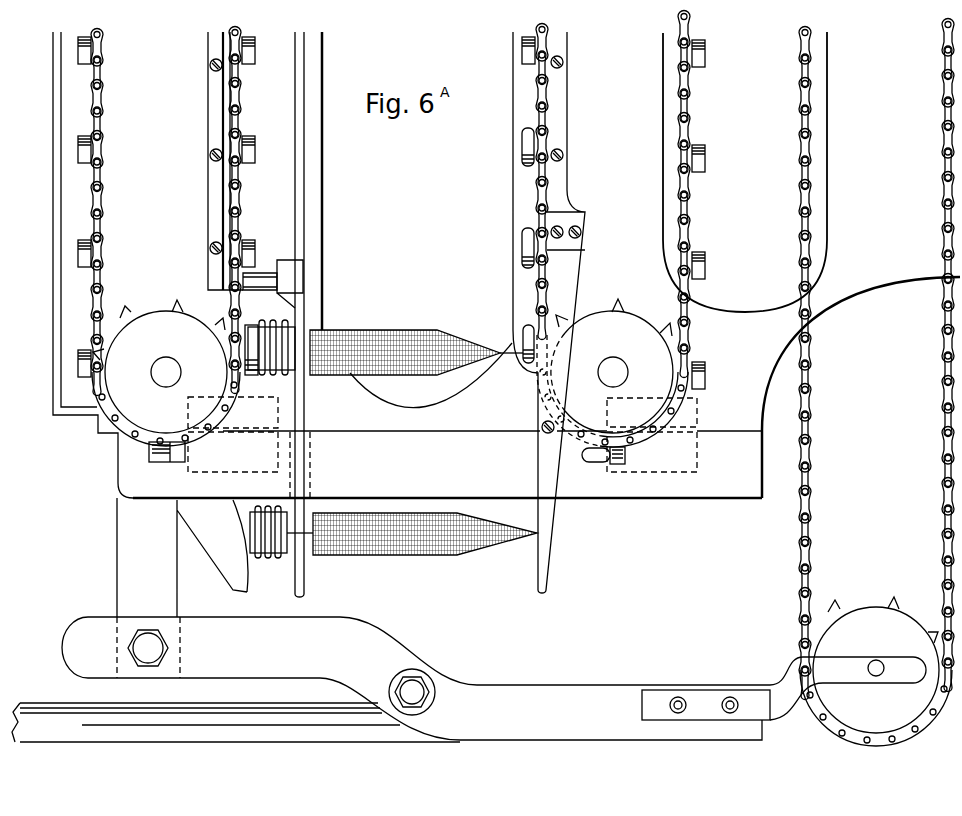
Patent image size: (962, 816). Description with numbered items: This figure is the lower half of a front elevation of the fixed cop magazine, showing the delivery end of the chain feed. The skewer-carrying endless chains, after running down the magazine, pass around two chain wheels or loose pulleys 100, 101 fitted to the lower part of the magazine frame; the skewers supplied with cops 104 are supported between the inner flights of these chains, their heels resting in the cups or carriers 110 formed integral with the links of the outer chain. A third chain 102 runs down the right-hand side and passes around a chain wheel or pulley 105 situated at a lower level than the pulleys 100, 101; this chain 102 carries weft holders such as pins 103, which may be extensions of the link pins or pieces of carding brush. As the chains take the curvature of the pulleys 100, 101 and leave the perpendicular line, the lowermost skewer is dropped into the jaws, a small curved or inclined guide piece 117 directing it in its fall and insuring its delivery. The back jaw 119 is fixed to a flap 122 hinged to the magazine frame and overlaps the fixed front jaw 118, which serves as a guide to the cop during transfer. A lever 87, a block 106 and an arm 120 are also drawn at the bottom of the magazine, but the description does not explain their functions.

The lever 87 is at (494, 678).
The chain wheel or loose pulley 100 is at (160, 366).
The chain wheel or loose pulley 101 is at (612, 366).
The third chain 102 is at (812, 297).
The weft holders or pins 103 is at (808, 404).
The cops 104 is at (398, 331).
The chain wheel or pulley 105 is at (876, 665).
The bracket block 106 is at (706, 705).
The cups or carriers 110 is at (250, 145).
The curved or inclined guide piece 117 is at (182, 589).
The front jaw 118 is at (303, 415).
The back jaw 119 is at (307, 578).
The tapered arm 120 is at (549, 312).
The flap 122 is at (546, 387).